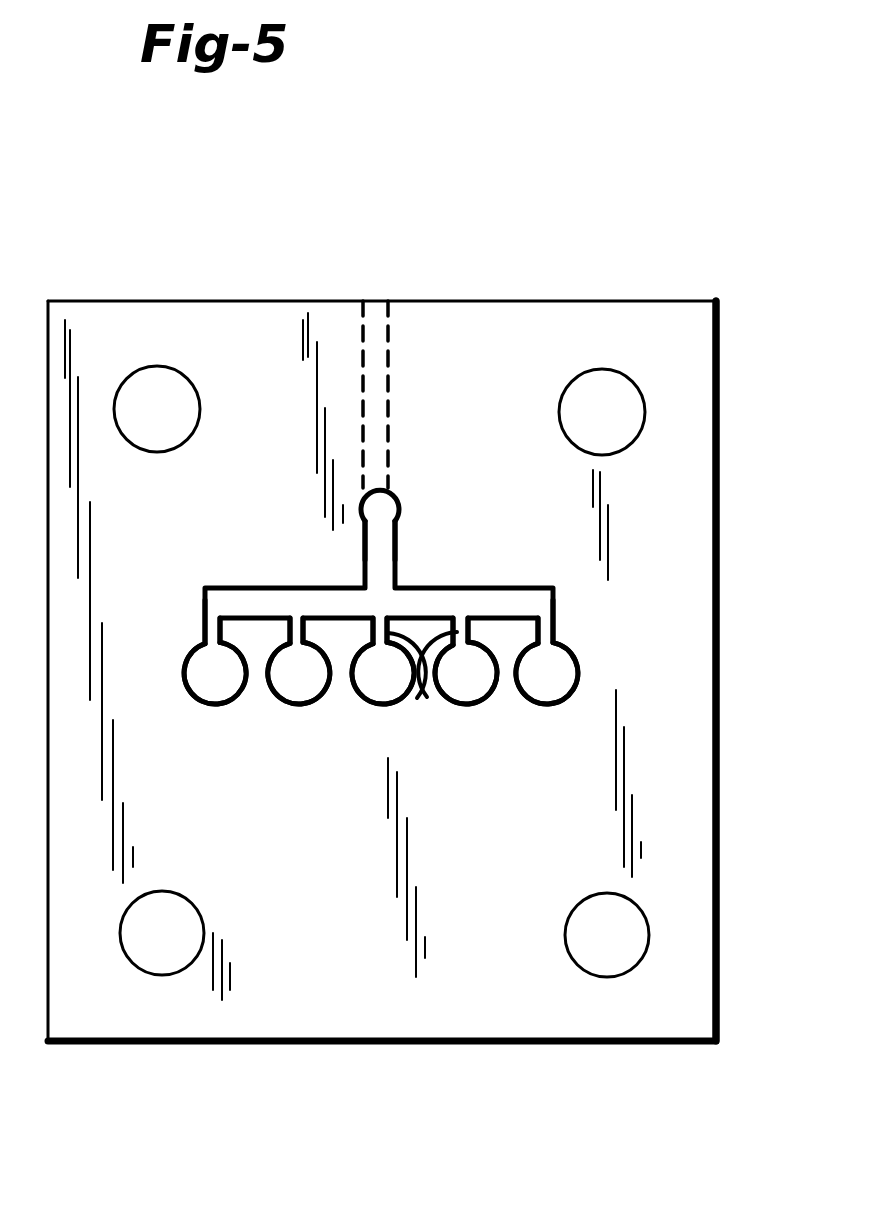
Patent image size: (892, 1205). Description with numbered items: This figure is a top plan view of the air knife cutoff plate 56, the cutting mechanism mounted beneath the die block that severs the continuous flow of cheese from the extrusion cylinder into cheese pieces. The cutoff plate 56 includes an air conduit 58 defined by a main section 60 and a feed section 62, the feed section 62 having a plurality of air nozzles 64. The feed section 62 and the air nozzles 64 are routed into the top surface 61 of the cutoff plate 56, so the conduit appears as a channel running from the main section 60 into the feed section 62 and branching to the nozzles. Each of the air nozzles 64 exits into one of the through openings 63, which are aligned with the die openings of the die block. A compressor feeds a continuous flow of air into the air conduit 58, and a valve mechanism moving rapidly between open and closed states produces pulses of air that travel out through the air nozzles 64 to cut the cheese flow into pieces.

The air knife cutoff plate 56 is at (672, 708).
The air conduit 58 is at (397, 523).
The main section 60 is at (390, 412).
The top surface 61 is at (692, 473).
The feed section 62 is at (388, 580).
The through openings 63 is at (367, 683).
The air nozzles 64 is at (213, 632).